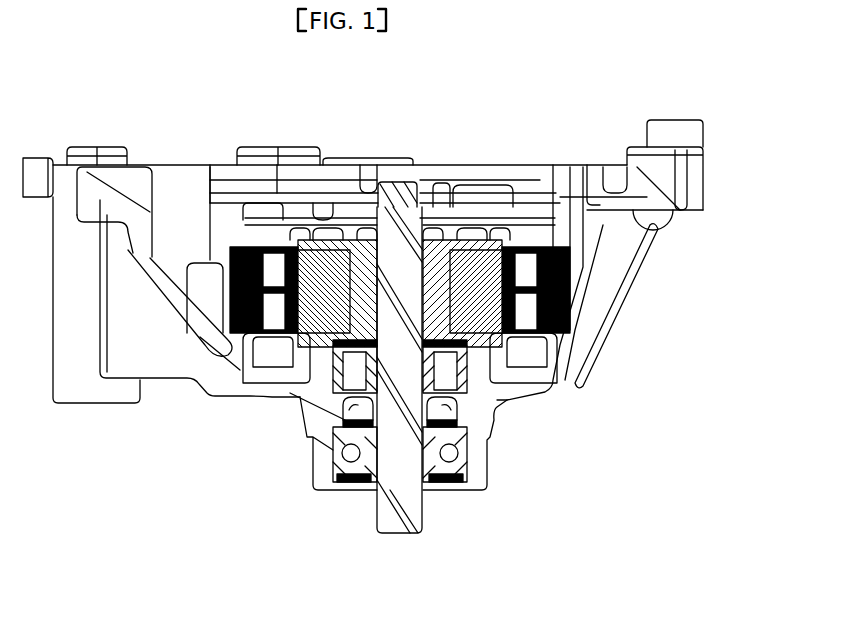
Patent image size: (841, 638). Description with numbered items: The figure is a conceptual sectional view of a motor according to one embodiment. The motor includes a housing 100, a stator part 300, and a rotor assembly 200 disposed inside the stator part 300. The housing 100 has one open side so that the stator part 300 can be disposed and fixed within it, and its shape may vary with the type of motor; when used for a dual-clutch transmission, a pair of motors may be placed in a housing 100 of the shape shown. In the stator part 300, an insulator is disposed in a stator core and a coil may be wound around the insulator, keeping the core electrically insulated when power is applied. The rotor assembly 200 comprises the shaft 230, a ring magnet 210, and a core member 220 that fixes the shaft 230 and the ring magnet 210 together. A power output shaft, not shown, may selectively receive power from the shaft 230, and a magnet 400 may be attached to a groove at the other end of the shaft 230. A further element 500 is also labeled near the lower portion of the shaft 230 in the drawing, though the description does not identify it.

The housing 100 is at (592, 260).
The rotor assembly 200 is at (415, 412).
The ring magnet 210 is at (493, 343).
The core member 220 is at (437, 335).
The shaft 230 is at (399, 398).
The stator part 300 is at (593, 313).
The magnet 400 is at (396, 188).
The bearing 500 is at (345, 465).